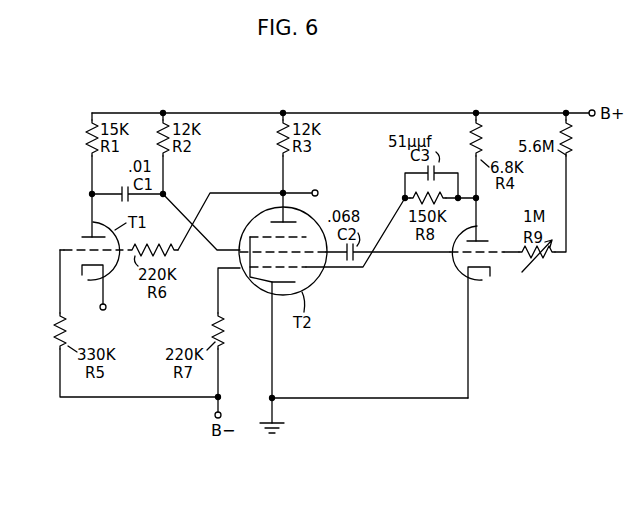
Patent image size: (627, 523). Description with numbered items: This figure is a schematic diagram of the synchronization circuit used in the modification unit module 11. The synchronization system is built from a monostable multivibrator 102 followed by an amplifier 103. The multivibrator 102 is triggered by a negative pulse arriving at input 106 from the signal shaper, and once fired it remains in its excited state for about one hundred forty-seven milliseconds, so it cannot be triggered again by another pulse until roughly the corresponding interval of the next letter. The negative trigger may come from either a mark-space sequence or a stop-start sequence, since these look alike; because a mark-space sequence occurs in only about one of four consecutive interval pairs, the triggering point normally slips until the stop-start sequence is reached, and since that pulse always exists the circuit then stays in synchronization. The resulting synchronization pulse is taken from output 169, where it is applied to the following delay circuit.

The module 11 is at (580, 74).
The monostable multivibrator 102 is at (303, 98).
The synchronization pulse output 169 is at (328, 184).
The trigger input 106 is at (106, 308).
The amplifier 103 is at (456, 278).